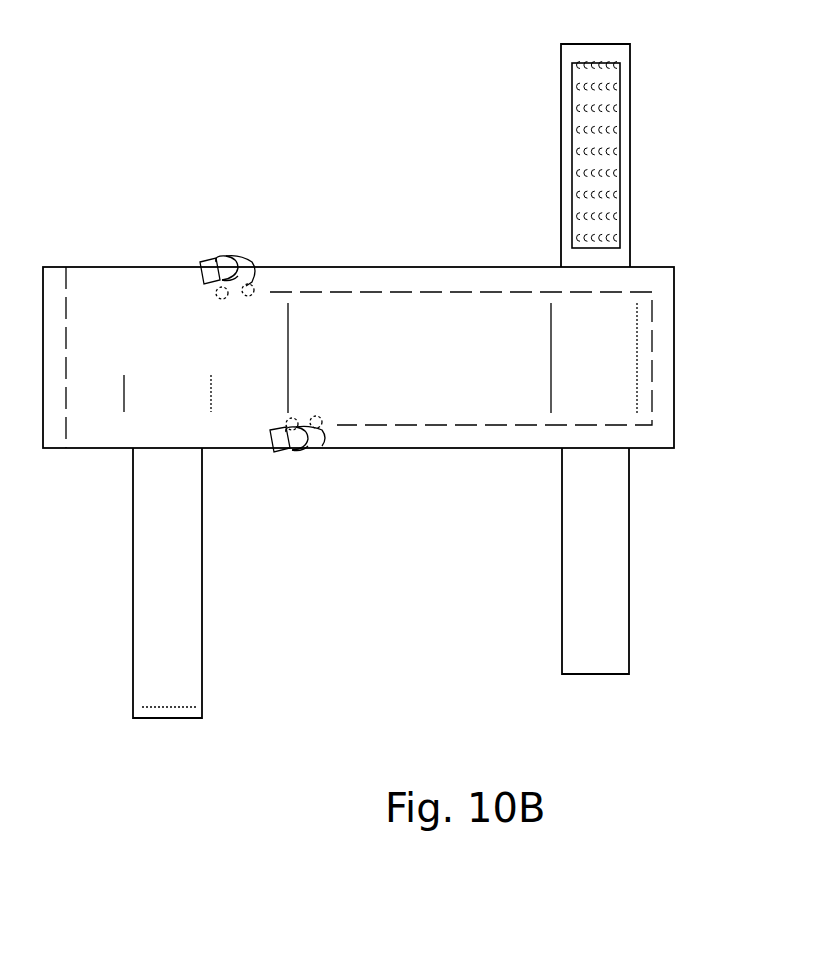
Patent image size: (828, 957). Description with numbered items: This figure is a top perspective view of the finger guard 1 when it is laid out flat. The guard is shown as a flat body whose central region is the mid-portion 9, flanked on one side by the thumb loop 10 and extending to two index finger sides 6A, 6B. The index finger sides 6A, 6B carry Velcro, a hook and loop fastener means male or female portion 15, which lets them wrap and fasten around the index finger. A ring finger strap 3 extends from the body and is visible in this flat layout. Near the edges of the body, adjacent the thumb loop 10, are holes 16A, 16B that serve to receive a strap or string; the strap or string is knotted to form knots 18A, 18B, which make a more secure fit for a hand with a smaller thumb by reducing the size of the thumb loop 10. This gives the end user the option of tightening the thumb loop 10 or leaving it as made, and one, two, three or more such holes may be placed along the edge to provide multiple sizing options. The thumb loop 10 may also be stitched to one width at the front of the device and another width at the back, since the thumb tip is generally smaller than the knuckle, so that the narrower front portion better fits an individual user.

The finger guard 1 is at (313, 98).
The ring finger strap 3 is at (167, 587).
The index finger side 6A is at (630, 207).
The index finger side 6B is at (614, 555).
The mid-portion 9 is at (333, 394).
The thumb loop 10 is at (178, 385).
The hook and loop fastener portion 15 is at (603, 162).
The hole 16A is at (250, 283).
The hole 16B is at (318, 432).
The knot 18A is at (226, 265).
The knot 18B is at (293, 447).